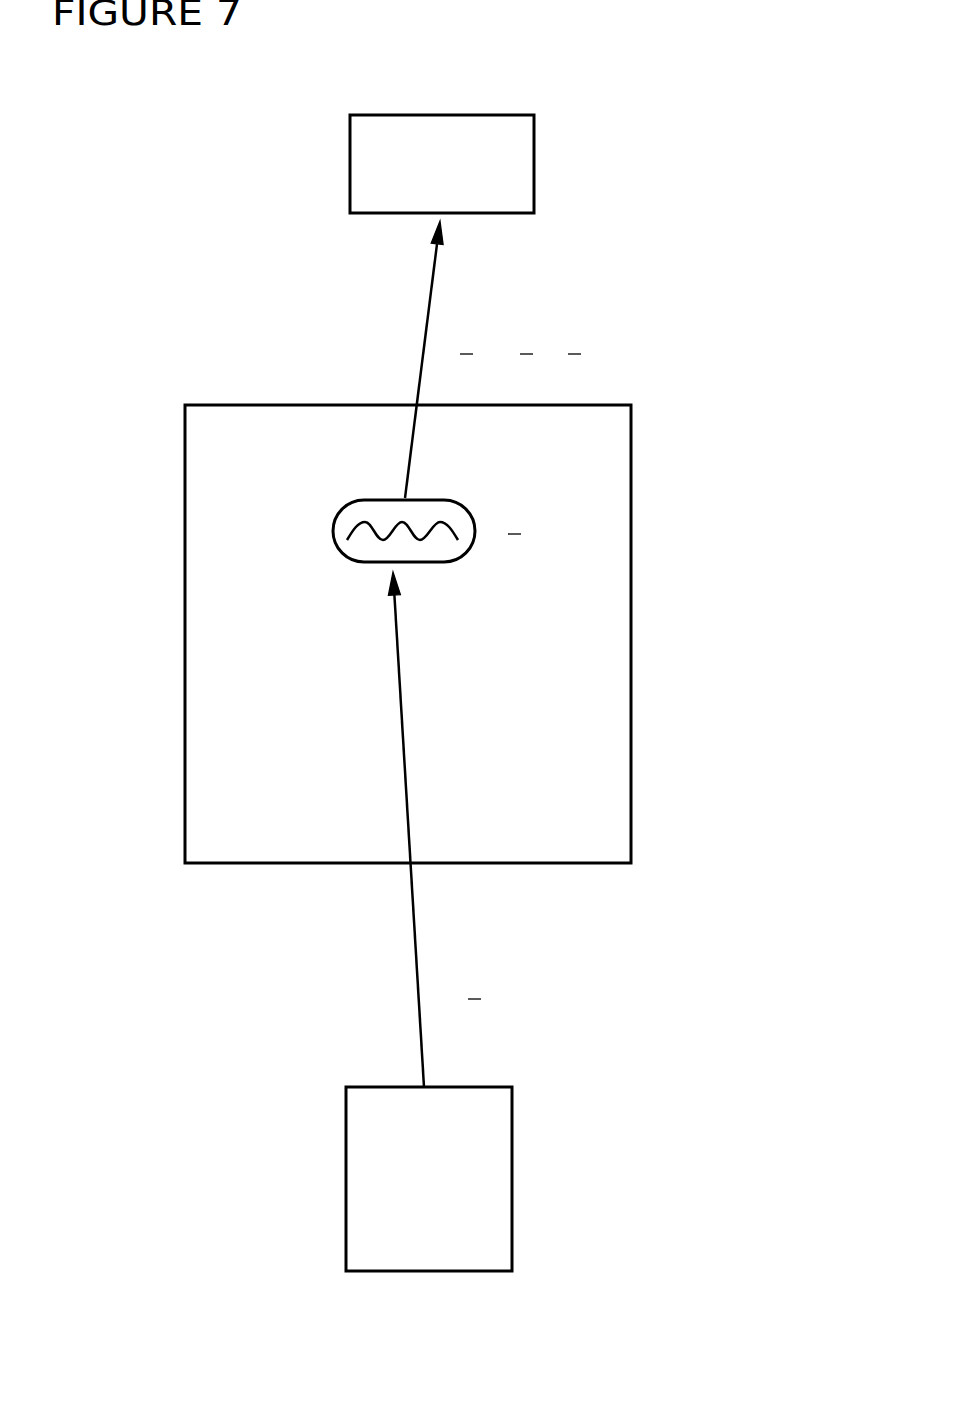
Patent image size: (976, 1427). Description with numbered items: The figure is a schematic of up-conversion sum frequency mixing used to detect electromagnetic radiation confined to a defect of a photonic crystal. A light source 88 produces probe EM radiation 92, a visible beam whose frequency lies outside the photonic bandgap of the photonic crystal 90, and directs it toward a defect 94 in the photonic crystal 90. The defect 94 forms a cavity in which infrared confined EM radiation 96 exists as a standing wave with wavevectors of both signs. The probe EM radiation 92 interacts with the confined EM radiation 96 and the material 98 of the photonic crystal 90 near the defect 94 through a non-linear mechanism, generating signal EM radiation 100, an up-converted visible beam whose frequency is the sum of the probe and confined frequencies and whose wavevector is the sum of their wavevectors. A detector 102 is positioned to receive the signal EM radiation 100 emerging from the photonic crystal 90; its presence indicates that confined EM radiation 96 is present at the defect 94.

The light source 88 is at (482, 1130).
The photonic crystal 90 is at (610, 738).
The probe EM radiation 92 is at (418, 962).
The defect 94 is at (345, 557).
The confined EM radiation 96 is at (417, 525).
The material 98 is at (432, 551).
The signal EM radiation 100 is at (430, 304).
The detector 102 is at (534, 162).